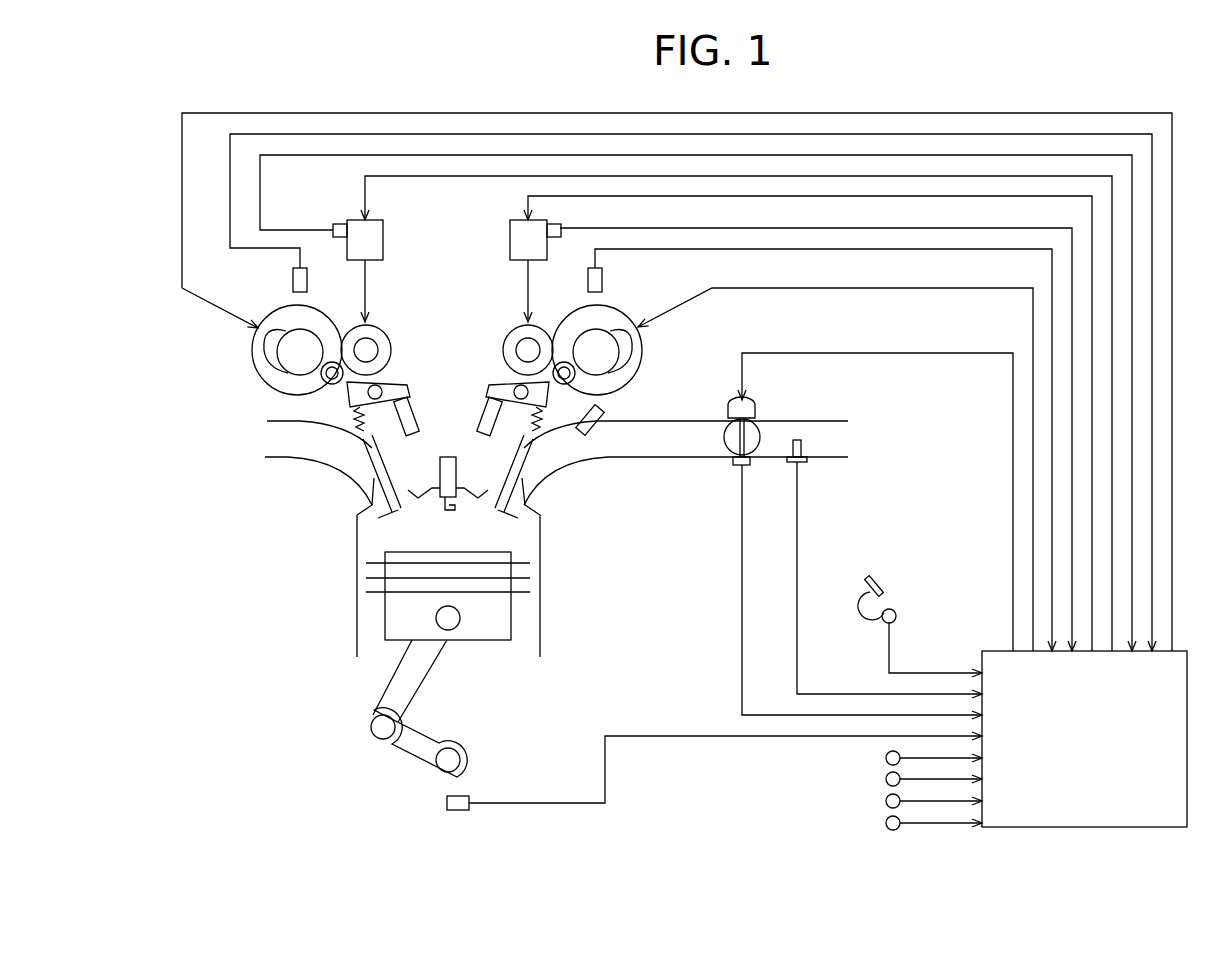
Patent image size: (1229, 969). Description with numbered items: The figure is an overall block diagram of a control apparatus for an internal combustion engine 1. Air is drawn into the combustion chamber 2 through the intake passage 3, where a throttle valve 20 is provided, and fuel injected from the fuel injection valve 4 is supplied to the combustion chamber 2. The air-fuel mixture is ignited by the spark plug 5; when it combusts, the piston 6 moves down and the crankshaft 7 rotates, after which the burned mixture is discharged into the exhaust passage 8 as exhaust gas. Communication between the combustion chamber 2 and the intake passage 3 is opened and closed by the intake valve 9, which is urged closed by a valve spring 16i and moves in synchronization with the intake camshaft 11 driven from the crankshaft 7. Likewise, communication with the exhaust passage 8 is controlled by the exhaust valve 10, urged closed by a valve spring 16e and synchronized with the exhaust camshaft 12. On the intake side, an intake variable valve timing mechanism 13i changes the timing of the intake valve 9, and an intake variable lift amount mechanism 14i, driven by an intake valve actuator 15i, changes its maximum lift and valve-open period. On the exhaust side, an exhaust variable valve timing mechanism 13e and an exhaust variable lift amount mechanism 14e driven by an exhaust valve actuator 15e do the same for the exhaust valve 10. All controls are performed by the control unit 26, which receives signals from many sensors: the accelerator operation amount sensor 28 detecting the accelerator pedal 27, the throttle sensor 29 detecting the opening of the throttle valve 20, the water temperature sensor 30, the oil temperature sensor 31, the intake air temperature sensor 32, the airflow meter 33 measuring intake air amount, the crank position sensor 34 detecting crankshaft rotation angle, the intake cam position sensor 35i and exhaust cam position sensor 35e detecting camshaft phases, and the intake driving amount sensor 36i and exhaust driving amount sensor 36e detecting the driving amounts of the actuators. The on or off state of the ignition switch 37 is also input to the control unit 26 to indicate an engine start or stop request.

The internal combustion engine 1 is at (322, 603).
The combustion chamber 2 is at (357, 545).
The intake passage 3 is at (637, 458).
The fuel injection valve 4 is at (608, 416).
The spark plug 5 is at (440, 468).
The piston 6 is at (487, 646).
The crankshaft 7 is at (462, 746).
The exhaust passage 8 is at (297, 458).
The intake valve 9 is at (530, 492).
The exhaust valve 10 is at (366, 492).
The intake camshaft 11 is at (580, 320).
The exhaust camshaft 12 is at (327, 322).
The intake variable valve timing mechanism 13i is at (644, 352).
The exhaust variable valve timing mechanism 13e is at (258, 380).
The intake variable lift amount mechanism 14i is at (506, 332).
The exhaust variable lift amount mechanism 14e is at (384, 332).
The intake valve actuator 15i is at (510, 236).
The exhaust valve actuator 15e is at (385, 228).
The valve spring 16i is at (540, 424).
The valve spring 16e is at (352, 419).
The throttle valve 20 is at (760, 414).
The control unit 26 is at (987, 650).
The accelerator pedal 27 is at (866, 580).
The accelerator operation amount sensor 28 is at (896, 612).
The throttle sensor 29 is at (752, 468).
The water temperature sensor 30 is at (886, 759).
The oil temperature sensor 31 is at (886, 780).
The intake air temperature sensor 32 is at (886, 802).
The airflow meter 33 is at (806, 464).
The crank position sensor 34 is at (452, 812).
The intake cam position sensor 35i is at (603, 278).
The exhaust cam position sensor 35e is at (292, 279).
The intake driving amount sensor 36i is at (561, 226).
The exhaust driving amount sensor 36e is at (333, 226).
The ignition switch 37 is at (886, 824).